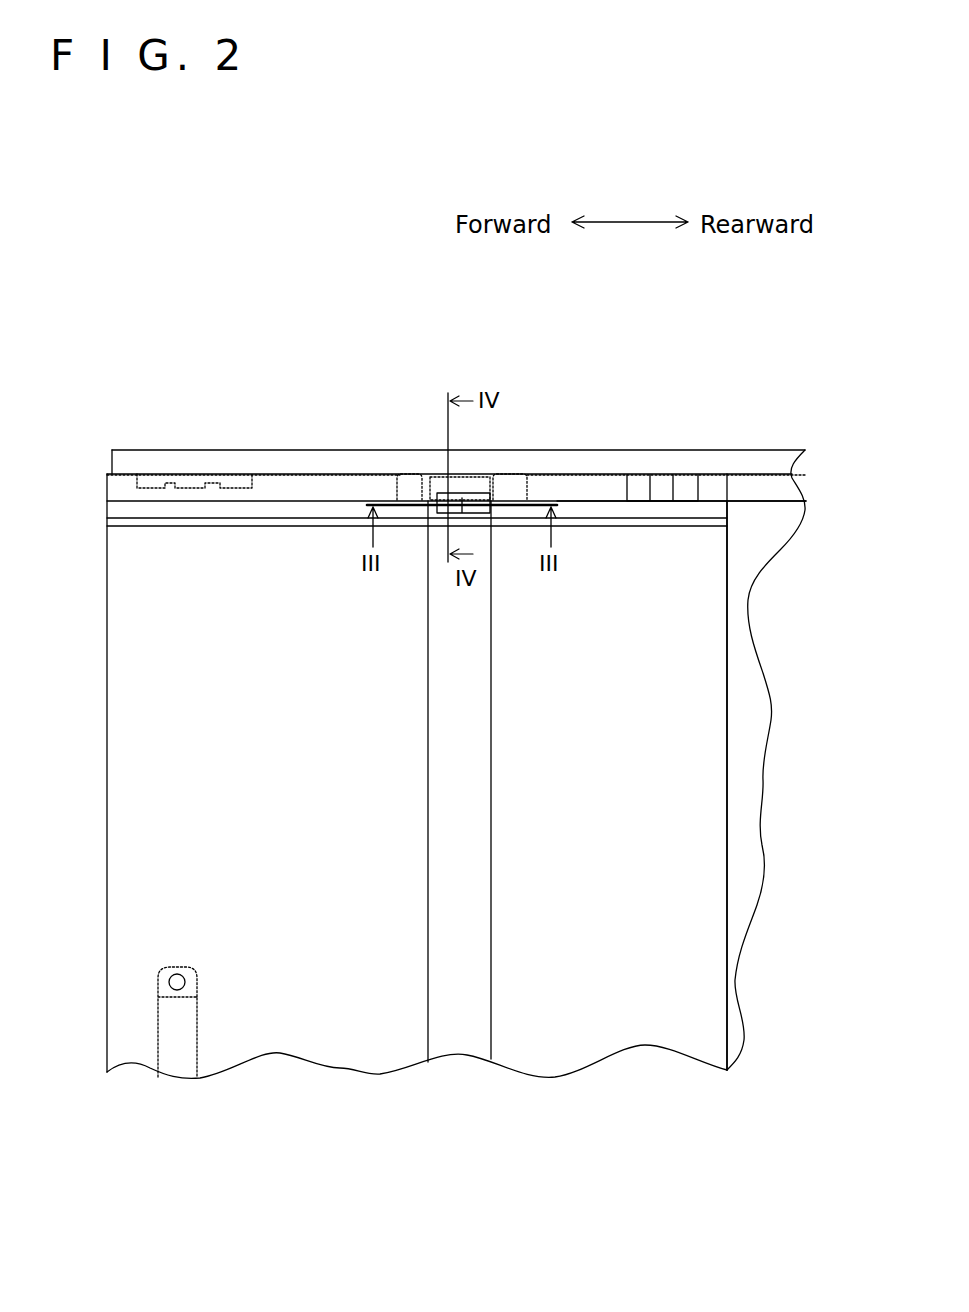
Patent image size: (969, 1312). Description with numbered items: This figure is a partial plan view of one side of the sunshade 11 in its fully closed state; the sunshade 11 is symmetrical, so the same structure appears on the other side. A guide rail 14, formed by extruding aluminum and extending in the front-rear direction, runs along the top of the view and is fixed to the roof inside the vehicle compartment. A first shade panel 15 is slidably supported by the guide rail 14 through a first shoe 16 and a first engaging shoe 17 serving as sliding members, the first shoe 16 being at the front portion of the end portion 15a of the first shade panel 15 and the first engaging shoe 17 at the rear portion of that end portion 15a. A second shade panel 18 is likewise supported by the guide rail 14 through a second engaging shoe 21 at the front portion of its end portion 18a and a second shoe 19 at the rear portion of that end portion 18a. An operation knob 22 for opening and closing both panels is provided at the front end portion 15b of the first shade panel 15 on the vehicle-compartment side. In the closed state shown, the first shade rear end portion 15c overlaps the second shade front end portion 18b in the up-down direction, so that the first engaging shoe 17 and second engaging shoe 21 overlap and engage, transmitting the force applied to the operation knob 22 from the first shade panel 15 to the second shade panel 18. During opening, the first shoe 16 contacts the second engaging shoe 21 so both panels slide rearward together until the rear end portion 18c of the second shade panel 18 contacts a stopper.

The sunshade 11 is at (282, 281).
The guide rail 14 is at (790, 434).
The first shade panel 15 is at (292, 650).
The end portion of the first shade panel 15a is at (300, 486).
The front end portion of the first shade panel 15b is at (125, 772).
The first shade rear end portion 15c is at (473, 1003).
The first shoe 16 is at (187, 486).
The first engaging shoe 17 is at (405, 487).
The second shade panel 18 is at (583, 665).
The end portion of the second shade panel 18a is at (590, 490).
The second shade front end portion 18b is at (442, 1005).
The rear end portion of the second shade panel 18c is at (718, 708).
The second shoe 19 is at (684, 487).
The second engaging shoe 21 is at (523, 482).
The operation knob 22 is at (180, 1032).